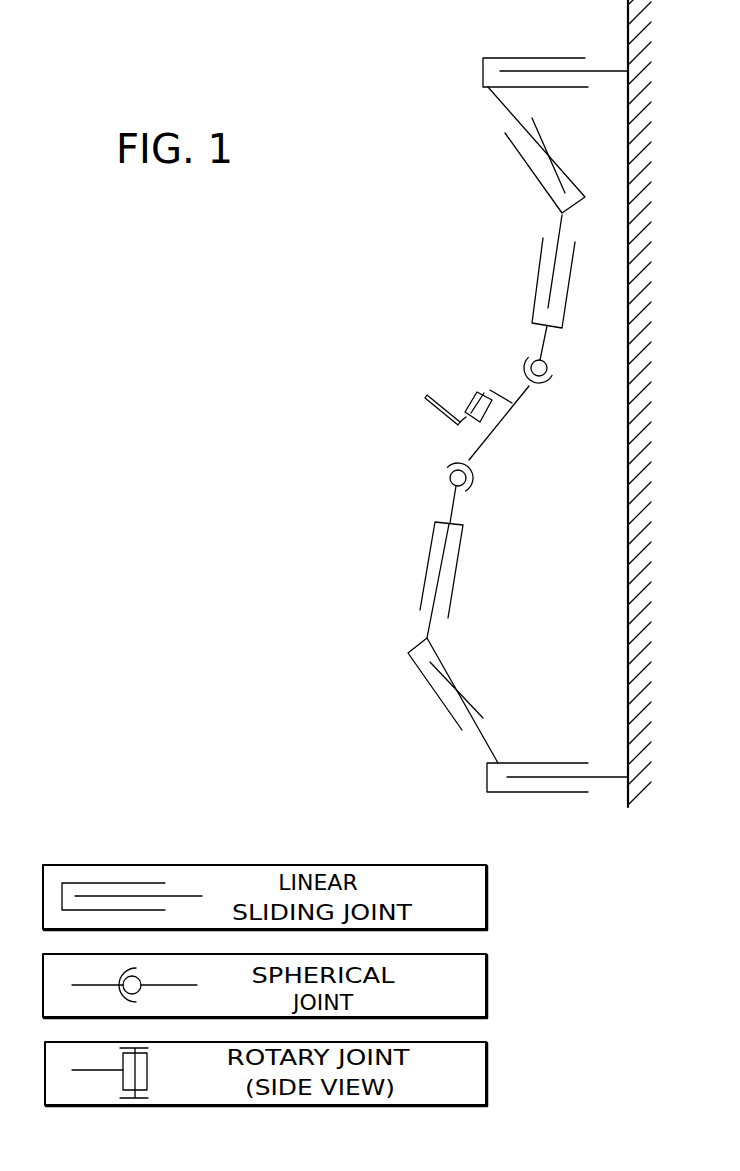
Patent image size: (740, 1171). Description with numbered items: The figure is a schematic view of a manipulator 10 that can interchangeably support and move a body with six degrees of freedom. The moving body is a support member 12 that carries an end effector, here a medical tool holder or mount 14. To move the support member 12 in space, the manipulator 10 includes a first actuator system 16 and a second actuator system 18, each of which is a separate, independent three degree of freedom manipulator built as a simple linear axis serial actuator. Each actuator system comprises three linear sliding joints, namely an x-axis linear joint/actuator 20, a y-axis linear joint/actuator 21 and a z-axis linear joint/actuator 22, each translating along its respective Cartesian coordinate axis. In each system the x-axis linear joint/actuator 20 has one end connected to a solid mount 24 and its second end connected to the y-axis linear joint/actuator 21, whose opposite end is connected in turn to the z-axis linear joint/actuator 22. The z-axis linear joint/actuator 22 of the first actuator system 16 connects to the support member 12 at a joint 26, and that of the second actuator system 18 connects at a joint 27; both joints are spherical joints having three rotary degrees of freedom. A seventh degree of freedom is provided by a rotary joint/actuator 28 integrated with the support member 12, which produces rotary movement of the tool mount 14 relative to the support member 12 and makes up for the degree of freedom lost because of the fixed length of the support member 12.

The manipulator 10 is at (383, 516).
The support member 12 is at (503, 418).
The medical tool holder or mount 14 is at (427, 412).
The first actuator system 16 is at (459, 101).
The second actuator system 18 is at (440, 764).
The x-axis linear joint/actuator 20 is at (488, 57).
The y-axis linear joint/actuator 21 is at (543, 193).
The z-axis linear joint/actuator 22 is at (532, 307).
The solid mount 24 is at (628, 530).
The joint 26 is at (547, 367).
The joint 27 is at (447, 475).
The rotary joint/actuator 28 is at (447, 383).